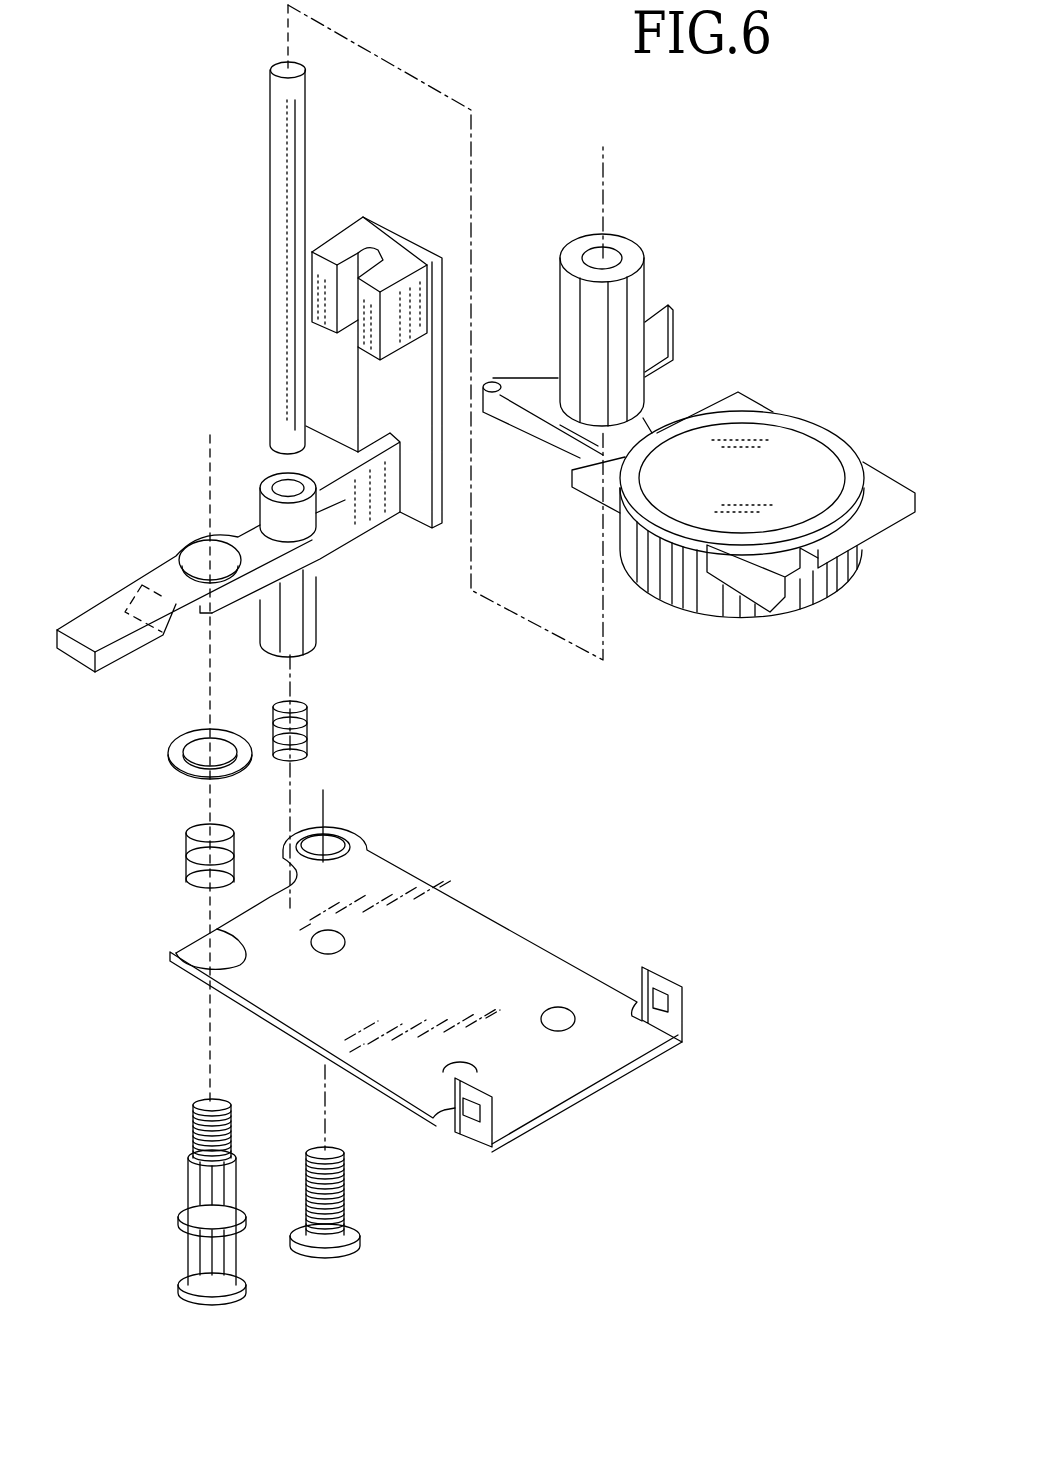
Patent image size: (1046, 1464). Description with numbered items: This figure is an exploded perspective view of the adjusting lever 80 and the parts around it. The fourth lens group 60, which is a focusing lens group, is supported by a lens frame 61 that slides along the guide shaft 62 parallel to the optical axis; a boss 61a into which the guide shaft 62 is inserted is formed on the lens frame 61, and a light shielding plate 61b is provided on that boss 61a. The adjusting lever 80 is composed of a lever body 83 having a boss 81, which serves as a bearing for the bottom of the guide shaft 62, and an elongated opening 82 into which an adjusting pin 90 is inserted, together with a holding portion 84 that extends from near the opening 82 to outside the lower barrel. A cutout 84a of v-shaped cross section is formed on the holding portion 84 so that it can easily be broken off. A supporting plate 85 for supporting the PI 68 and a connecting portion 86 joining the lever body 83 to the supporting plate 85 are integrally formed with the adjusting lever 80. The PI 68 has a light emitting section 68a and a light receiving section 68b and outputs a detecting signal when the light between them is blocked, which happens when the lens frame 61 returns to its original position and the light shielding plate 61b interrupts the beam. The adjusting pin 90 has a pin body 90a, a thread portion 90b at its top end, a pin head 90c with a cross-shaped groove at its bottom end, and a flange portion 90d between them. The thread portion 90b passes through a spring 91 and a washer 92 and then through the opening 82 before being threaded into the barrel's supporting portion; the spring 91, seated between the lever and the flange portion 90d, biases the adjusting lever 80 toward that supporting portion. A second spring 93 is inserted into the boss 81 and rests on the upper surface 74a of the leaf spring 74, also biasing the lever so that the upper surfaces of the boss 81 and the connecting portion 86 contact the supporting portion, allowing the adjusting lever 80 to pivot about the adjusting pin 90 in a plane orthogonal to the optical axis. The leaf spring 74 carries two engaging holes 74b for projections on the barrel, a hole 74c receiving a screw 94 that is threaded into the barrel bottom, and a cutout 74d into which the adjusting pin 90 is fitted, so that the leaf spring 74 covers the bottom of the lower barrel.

The fourth lens group 60 is at (783, 452).
The lens frame 61 is at (699, 476).
The boss 61a is at (647, 273).
The light shielding plate 61b is at (667, 338).
The guide shaft 62 is at (270, 172).
The PI 68 is at (375, 283).
The light emitting section 68a is at (343, 242).
The light receiving section 68b is at (413, 338).
The leaf spring 74 is at (451, 998).
The upper surface 74a is at (450, 931).
The engaging holes 74b is at (662, 1012).
The hole 74c is at (348, 838).
The cutout 74d is at (233, 970).
The adjusting lever 80 is at (168, 503).
The boss 81 is at (303, 580).
The opening 82 is at (183, 557).
The lever body 83 is at (248, 530).
The holding portion 84 is at (83, 635).
The cutout 84a is at (175, 623).
The supporting plate 85 is at (443, 355).
The connecting portion 86 is at (345, 530).
The adjusting pin 90 is at (231, 1229).
The pin body 90a is at (187, 1253).
The thread portion 90b is at (192, 1128).
The pin head 90c is at (210, 1310).
The flange portion 90d is at (178, 1217).
The spring 91 is at (178, 888).
The washer 92 is at (190, 768).
The spring 93 is at (307, 745).
The screw 94 is at (342, 1203).